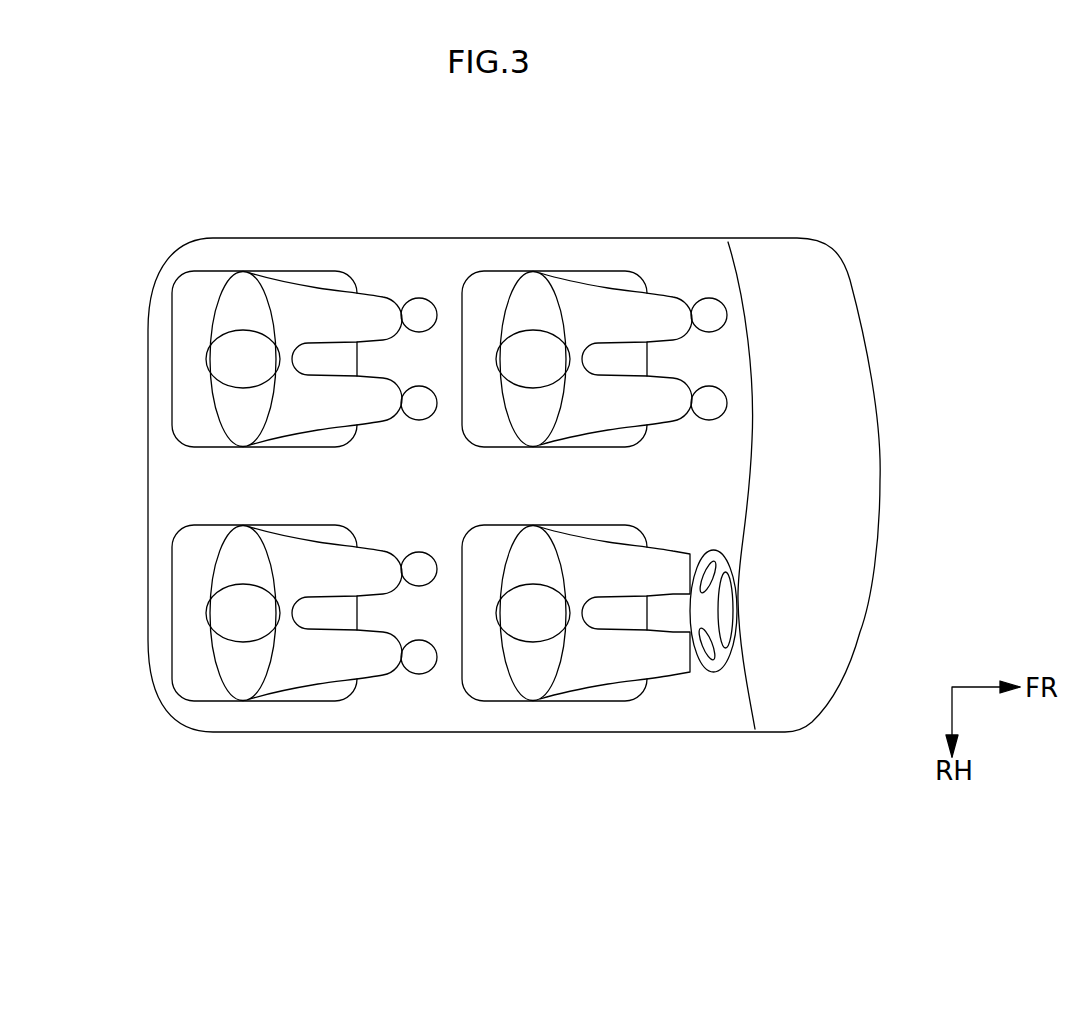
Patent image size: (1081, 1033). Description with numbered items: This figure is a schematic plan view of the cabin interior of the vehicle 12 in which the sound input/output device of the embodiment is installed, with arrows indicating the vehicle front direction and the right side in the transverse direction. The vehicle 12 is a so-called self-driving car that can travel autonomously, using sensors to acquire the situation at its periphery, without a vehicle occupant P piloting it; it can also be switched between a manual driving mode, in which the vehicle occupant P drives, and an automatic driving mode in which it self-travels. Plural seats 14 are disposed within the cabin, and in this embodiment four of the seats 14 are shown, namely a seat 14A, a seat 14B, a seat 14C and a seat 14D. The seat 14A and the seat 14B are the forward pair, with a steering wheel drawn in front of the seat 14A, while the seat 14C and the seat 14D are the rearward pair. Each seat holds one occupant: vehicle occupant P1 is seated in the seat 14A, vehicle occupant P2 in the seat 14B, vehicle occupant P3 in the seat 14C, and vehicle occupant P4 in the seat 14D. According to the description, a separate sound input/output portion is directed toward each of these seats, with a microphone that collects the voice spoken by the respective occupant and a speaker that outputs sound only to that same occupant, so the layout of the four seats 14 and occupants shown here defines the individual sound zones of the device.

The vehicle 12 is at (909, 255).
The seats 14 is at (474, 498).
The seat 14A is at (603, 702).
The seat 14B is at (572, 270).
The seat 14C is at (316, 702).
The seat 14D is at (316, 270).
The vehicle occupant P is at (477, 489).
The vehicle occupant P1 is at (562, 693).
The vehicle occupant P2 is at (610, 287).
The vehicle occupant P3 is at (275, 690).
The vehicle occupant P4 is at (276, 286).